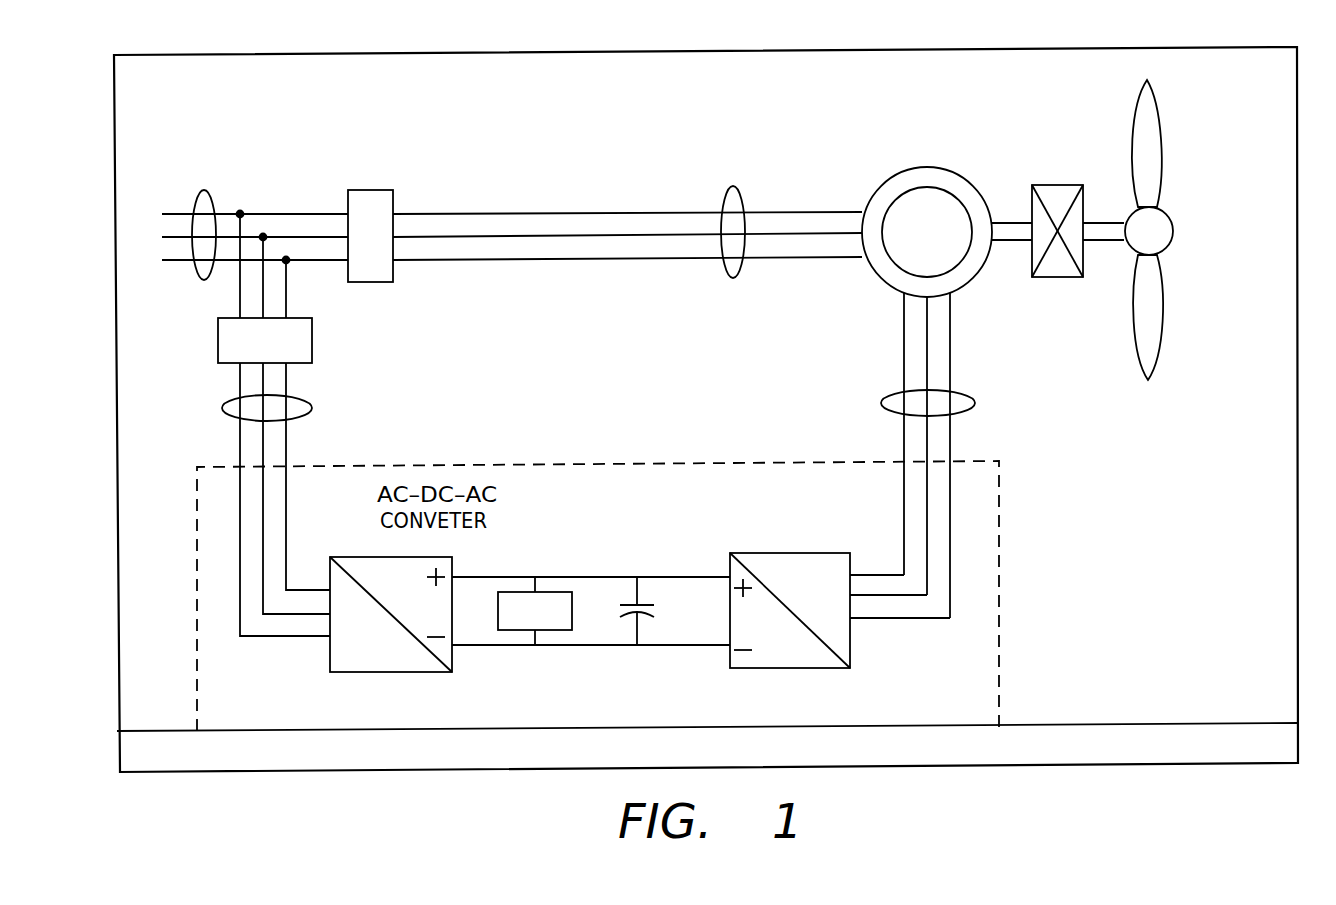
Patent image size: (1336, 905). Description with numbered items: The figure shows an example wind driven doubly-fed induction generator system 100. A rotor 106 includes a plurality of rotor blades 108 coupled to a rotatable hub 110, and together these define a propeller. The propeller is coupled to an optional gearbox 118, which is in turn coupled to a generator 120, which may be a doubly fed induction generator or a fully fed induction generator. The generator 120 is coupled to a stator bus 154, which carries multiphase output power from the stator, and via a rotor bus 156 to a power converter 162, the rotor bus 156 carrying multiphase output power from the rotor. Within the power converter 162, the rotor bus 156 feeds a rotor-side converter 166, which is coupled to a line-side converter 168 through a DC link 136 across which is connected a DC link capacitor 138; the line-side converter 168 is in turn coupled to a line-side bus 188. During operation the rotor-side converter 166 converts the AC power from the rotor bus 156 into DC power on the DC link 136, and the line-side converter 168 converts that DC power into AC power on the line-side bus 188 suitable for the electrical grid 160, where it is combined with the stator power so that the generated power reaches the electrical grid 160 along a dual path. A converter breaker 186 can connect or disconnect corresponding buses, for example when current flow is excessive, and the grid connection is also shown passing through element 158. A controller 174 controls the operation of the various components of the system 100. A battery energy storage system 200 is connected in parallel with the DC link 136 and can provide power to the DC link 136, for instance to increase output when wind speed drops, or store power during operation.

The wind driven doubly-fed induction generator (DFIG) system 100 is at (498, 116).
The rotor 106 is at (1203, 234).
The rotor blades 108 is at (1162, 155).
The rotatable hub 110 is at (1175, 223).
The gearbox 118 is at (1058, 185).
The generator 120 is at (922, 166).
The DC link 136 is at (644, 576).
The DC link capacitor 138 is at (627, 604).
The stator bus 154 is at (733, 186).
The rotor bus 156 is at (973, 403).
The main transformer / grid breaker 158 is at (369, 190).
The electrical grid 160 is at (204, 190).
The power converter 162 is at (999, 549).
The rotor-side converter 166 is at (850, 644).
The line-side converter 168 is at (330, 650).
The controller 174 is at (1060, 722).
The converter breaker 186 is at (218, 346).
The line-side bus 188 is at (222, 419).
The battery energy storage system (BESS) 200 is at (507, 591).